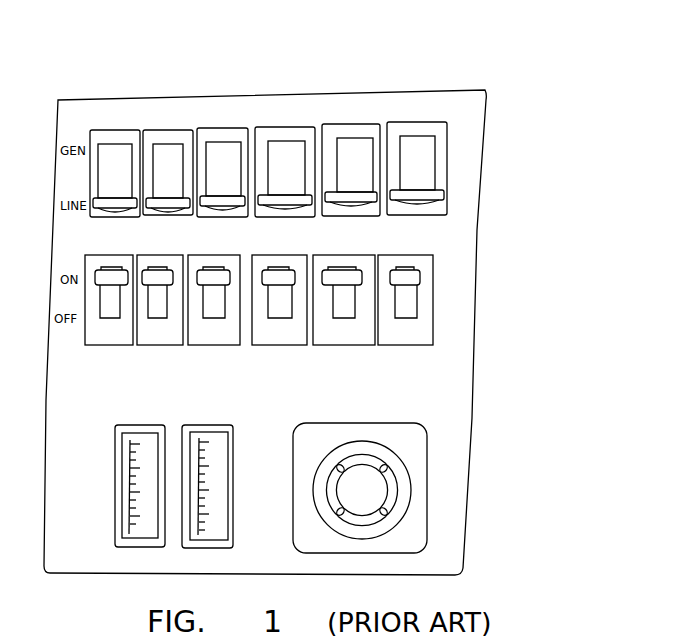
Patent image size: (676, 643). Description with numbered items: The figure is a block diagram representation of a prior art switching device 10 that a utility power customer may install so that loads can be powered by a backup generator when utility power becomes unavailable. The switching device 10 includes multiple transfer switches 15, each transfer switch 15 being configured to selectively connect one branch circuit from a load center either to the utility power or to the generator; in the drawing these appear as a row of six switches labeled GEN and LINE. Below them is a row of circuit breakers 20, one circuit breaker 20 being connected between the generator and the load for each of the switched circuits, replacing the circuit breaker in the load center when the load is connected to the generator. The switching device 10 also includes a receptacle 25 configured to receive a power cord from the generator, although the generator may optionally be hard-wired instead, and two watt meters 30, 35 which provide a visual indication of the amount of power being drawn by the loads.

The switching device 10 is at (496, 127).
The transfer switch 15 is at (110, 137).
The circuit breaker 20 is at (110, 347).
The receptacle 25 is at (425, 478).
The watt meter 30 is at (115, 490).
The watt meter 35 is at (230, 507).